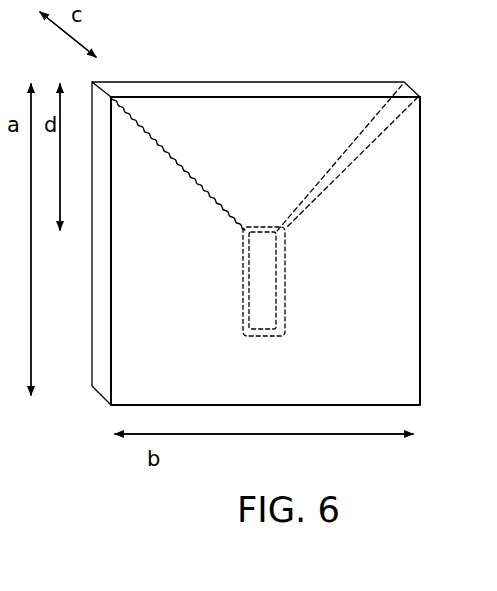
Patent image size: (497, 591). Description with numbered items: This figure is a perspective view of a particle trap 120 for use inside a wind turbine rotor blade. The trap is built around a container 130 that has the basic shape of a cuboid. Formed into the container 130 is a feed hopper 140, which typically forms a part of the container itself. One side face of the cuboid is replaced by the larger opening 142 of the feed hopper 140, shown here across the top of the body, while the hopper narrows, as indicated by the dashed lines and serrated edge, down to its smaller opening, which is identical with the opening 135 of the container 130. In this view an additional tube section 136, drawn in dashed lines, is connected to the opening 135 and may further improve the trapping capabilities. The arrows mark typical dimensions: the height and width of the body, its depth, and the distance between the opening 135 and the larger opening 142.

The particle trap 120 is at (179, 50).
The container 130 is at (390, 263).
The opening 135 is at (245, 230).
The tube section 136 is at (285, 312).
The feed hopper 140 is at (375, 129).
The larger opening 142 is at (288, 91).